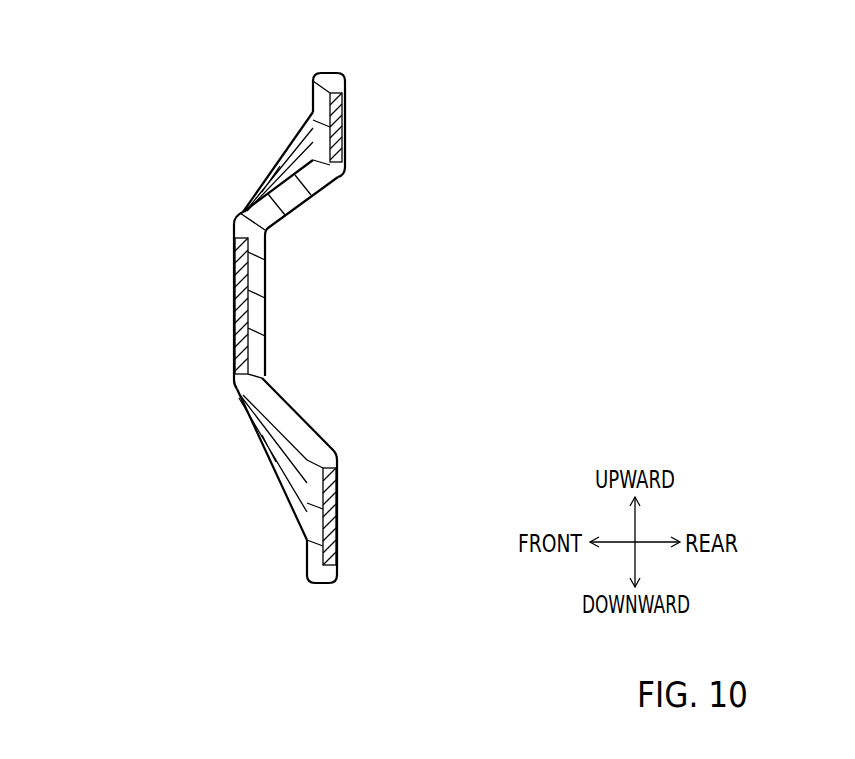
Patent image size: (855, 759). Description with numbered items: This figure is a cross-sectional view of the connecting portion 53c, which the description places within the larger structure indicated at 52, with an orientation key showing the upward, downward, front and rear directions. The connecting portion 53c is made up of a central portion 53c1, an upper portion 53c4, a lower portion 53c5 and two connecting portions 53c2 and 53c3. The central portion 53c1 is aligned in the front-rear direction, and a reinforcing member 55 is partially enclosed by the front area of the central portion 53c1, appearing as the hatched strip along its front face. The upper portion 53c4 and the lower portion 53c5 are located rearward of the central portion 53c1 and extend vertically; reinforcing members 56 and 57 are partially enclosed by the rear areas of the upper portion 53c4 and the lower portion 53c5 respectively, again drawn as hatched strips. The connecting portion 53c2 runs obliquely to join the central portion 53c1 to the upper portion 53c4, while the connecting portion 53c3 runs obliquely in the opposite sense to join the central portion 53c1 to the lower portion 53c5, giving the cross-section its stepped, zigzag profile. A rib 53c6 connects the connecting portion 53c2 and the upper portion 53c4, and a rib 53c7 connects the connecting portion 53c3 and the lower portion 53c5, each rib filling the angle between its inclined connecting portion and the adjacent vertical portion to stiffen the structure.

The mounting bracket assembly 52 is at (121, 85).
The connecting portion 53c is at (221, 217).
The central portion 53c1 is at (263, 308).
The connecting portion 53c2 is at (296, 208).
The connecting portion 53c3 is at (298, 412).
The upper portion 53c4 is at (328, 77).
The lower portion 53c5 is at (322, 585).
The rib 53c6 is at (292, 157).
The rib 53c7 is at (277, 467).
The reinforcing member 55 is at (235, 296).
The reinforcing member 56 is at (343, 128).
The reinforcing member 57 is at (339, 505).